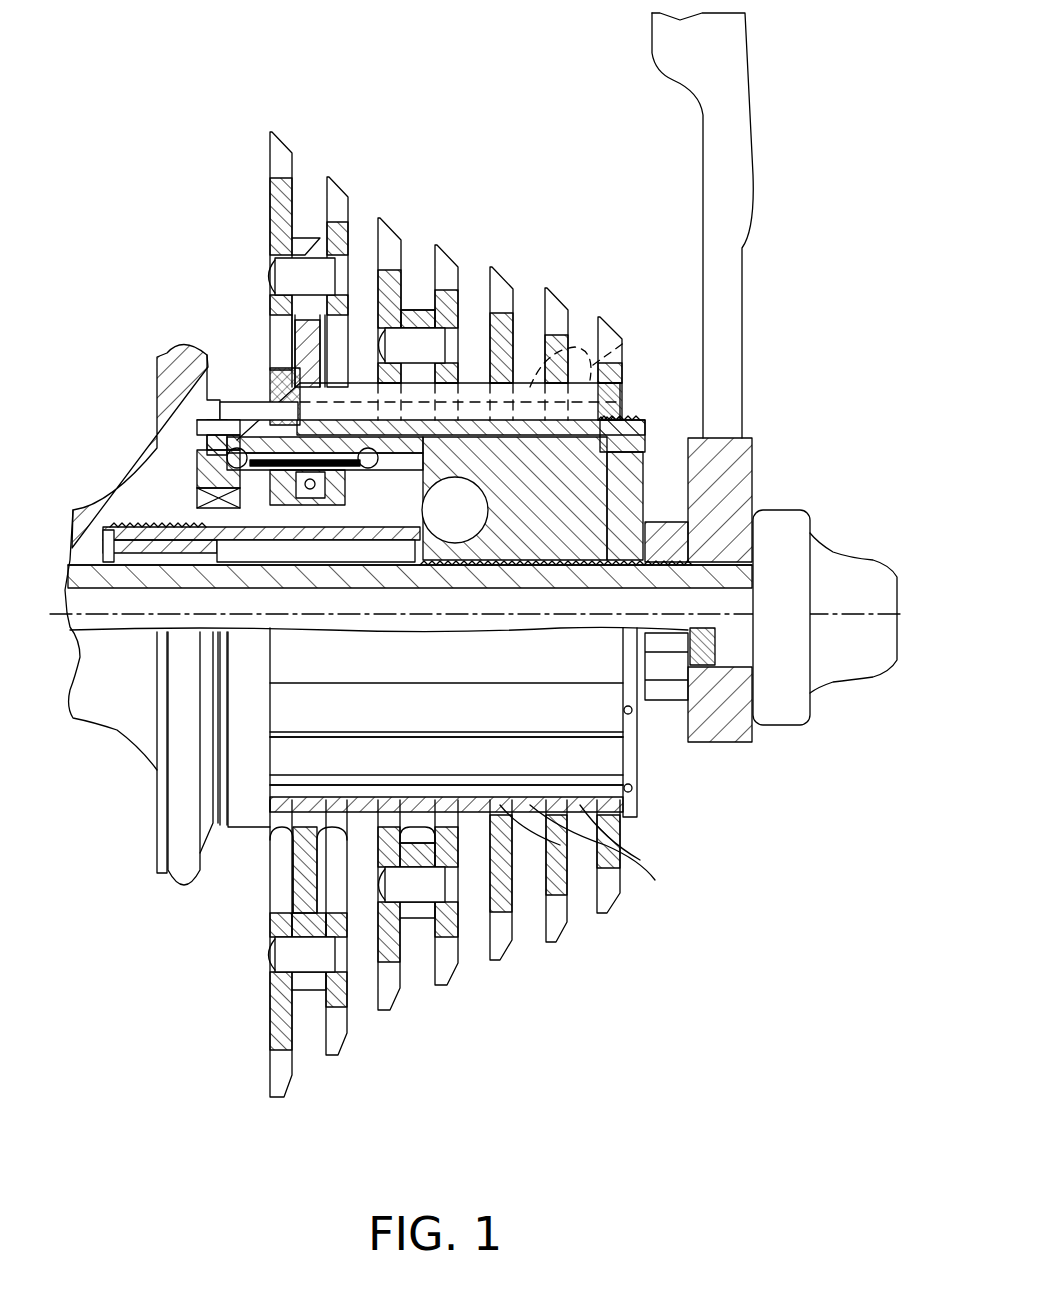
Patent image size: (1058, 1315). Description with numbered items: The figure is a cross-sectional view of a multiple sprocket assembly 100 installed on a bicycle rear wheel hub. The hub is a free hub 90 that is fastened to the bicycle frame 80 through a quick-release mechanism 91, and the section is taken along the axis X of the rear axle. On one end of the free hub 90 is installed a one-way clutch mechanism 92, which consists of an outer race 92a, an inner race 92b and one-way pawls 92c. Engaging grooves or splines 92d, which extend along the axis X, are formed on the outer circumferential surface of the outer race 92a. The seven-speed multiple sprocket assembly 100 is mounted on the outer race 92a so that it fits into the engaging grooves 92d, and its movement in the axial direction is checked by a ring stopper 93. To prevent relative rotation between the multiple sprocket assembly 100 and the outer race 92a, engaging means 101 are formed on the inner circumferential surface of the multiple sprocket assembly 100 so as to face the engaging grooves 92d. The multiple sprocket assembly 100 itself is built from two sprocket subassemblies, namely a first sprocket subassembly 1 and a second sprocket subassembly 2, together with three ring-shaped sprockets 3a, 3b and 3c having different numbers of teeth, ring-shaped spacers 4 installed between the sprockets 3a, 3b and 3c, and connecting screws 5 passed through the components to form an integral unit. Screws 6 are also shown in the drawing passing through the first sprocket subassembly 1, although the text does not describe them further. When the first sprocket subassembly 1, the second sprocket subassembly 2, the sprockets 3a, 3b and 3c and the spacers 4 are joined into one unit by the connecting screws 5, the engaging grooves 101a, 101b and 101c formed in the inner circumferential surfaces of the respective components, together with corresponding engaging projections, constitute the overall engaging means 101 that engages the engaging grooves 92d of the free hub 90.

The multiple sprocket assembly 100 is at (251, 160).
The first sprocket subassembly 1 is at (306, 194).
The second sprocket subassembly 2 is at (410, 252).
The first sprocket 3a is at (497, 262).
The second sprocket 3b is at (556, 285).
The third sprocket 3c is at (612, 313).
The ring-shaped spacers 4 is at (625, 342).
The connecting screws 5 is at (375, 356).
The fastening bolt 6 is at (285, 275).
The bicycle frame 80 is at (748, 178).
The quick-release mechanism 91 is at (843, 670).
The free hub 90 is at (140, 368).
The one-way clutch mechanism 92 is at (255, 378).
The outer race 92a is at (230, 403).
The inner race 92b is at (203, 473).
The one-way pawls 92c is at (312, 498).
The engaging grooves 92d is at (610, 755).
The ring stopper 93 is at (640, 430).
The engaging means 101 is at (370, 797).
The engaging groove 101a is at (330, 812).
The engaging groove 101b is at (606, 800).
The engaging groove 101c is at (596, 859).
The axis of the rear axle X is at (850, 615).